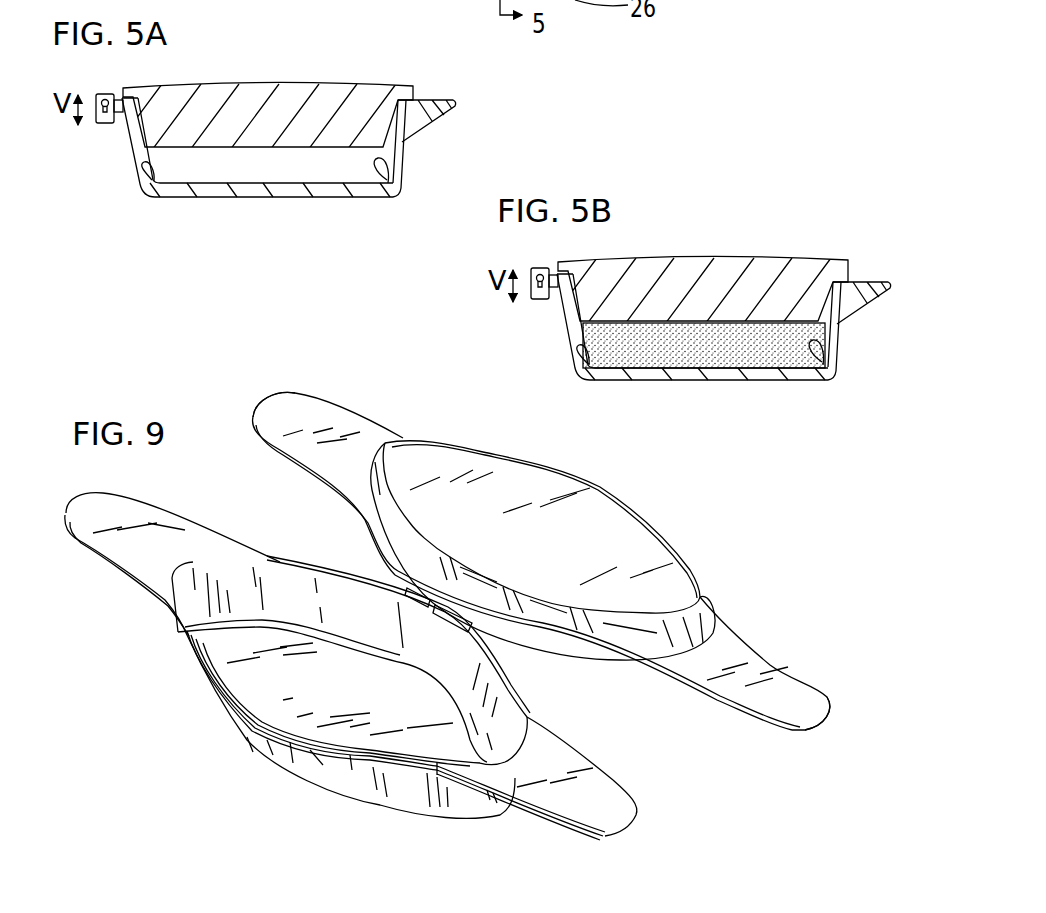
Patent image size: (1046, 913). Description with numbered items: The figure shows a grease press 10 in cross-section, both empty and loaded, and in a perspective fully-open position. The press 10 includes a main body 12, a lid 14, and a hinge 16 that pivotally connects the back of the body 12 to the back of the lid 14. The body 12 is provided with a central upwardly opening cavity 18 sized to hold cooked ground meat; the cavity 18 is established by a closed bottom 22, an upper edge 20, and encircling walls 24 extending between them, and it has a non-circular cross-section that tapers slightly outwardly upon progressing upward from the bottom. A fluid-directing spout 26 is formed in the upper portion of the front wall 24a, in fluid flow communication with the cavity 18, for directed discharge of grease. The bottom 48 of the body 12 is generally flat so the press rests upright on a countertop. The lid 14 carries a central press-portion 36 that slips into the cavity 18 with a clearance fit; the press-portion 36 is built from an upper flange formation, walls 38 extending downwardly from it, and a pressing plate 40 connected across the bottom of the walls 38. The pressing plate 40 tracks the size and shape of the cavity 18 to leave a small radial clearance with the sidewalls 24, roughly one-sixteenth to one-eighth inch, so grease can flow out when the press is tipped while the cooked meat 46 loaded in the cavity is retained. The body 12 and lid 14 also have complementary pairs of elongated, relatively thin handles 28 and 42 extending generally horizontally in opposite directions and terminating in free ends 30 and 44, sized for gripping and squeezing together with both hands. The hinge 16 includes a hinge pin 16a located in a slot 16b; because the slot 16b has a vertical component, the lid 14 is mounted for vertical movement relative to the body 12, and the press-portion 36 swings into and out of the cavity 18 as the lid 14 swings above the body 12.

In FIG. 5A, the press 10 is at (300, 50).
In FIG. 5B, the press 10 is at (786, 214).
In FIG. 9, the press 10 is at (214, 775).
In FIG. 5A, the main body 12 is at (305, 197).
In FIG. 5B, the main body 12 is at (692, 345).
In FIG. 9, the main body 12 is at (398, 801).
In FIG. 5A, the lid 14 is at (202, 80).
In FIG. 5B, the lid 14 is at (668, 228).
In FIG. 9, the lid 14 is at (691, 561).
In FIG. 9, the hinge 16 is at (401, 581).
In FIG. 5A, the hinge pin 16a is at (106, 97).
In FIG. 5B, the hinge pin 16a is at (570, 264).
In FIG. 5A, the slot 16b is at (105, 125).
In FIG. 5B, the slot 16b is at (520, 311).
In FIG. 5A, the cavity 18 is at (186, 174).
In FIG. 9, the cavity 18 is at (237, 664).
In FIG. 5A, the upper edge 20 is at (444, 99).
In FIG. 5B, the upper edge 20 is at (864, 276).
In FIG. 9, the upper edge 20 is at (192, 663).
In FIG. 5A, the closed bottom 22 is at (240, 185).
In FIG. 5B, the closed bottom 22 is at (637, 390).
In FIG. 9, the closed bottom 22 is at (374, 709).
In FIG. 5A, the encircling walls 24 is at (138, 188).
In FIG. 5B, the encircling walls 24 is at (551, 372).
In FIG. 9, the encircling walls 24 is at (298, 614).
In FIG. 5A, the front wall 24a is at (380, 172).
In FIG. 5B, the front wall 24a is at (840, 377).
In FIG. 5A, the spout 26 is at (405, 118).
In FIG. 5B, the spout 26 is at (859, 331).
In FIG. 9, the spout 26 is at (229, 723).
In FIG. 9, the handles 28 is at (130, 580).
In FIG. 9, the free ends 30 is at (66, 536).
In FIG. 5A, the press-portion 36 is at (277, 131).
In FIG. 5B, the press-portion 36 is at (709, 290).
In FIG. 9, the press-portion 36 is at (637, 529).
In FIG. 9, the walls 38 is at (640, 657).
In FIG. 5A, the pressing plate 40 is at (170, 165).
In FIG. 5B, the pressing plate 40 is at (551, 352).
In FIG. 9, the pressing plate 40 is at (577, 561).
In FIG. 9, the handles 42 is at (356, 424).
In FIG. 9, the free ends 44 is at (262, 401).
In FIG. 5B, the cooked meat 46 is at (681, 372).
In FIG. 5A, the bottom 48 is at (258, 198).
In FIG. 5B, the bottom 48 is at (705, 396).